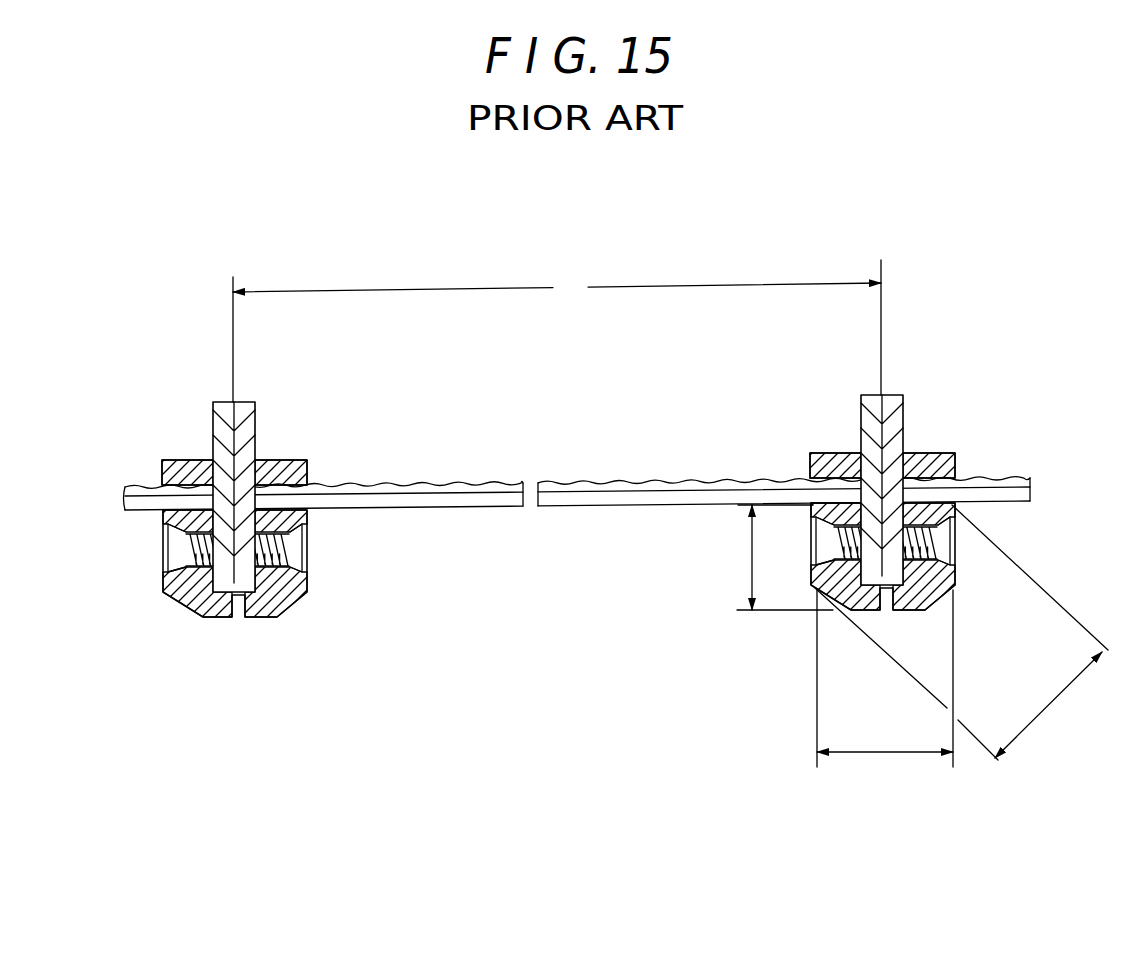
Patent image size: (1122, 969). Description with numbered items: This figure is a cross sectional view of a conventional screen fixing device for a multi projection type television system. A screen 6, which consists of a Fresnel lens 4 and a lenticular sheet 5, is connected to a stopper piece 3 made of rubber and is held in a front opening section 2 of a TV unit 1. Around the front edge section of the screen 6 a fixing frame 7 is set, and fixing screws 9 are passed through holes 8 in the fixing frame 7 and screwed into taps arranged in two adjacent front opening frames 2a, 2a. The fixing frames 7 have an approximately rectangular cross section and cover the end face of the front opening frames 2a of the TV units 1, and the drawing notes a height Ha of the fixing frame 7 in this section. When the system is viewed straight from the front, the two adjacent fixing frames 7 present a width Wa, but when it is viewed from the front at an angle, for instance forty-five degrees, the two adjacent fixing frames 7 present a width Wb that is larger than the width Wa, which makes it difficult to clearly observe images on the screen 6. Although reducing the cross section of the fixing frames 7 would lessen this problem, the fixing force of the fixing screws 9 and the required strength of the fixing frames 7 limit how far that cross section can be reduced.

The TV unit 1 is at (557, 331).
The front opening section 2 is at (488, 521).
The front opening frame 2a is at (212, 442).
The stopper piece 3 is at (299, 460).
The Fresnel lens 4 is at (597, 483).
The lenticular sheet 5 is at (601, 500).
The screen 6 is at (552, 506).
The fixing frame 7 is at (190, 610).
The hole 8 is at (190, 540).
The fixing screw 9 is at (165, 560).
The nut height Ha is at (766, 557).
The width of two adjacent fixing frames viewed from the front Wa is at (885, 678).
The width of two adjacent fixing frames viewed at an angle Wb is at (961, 632).